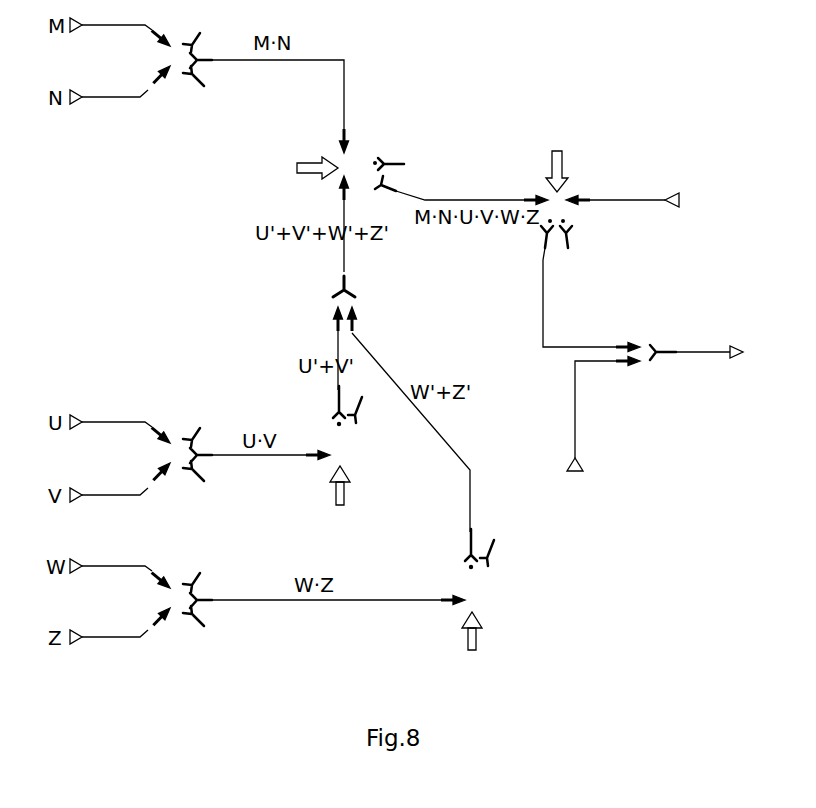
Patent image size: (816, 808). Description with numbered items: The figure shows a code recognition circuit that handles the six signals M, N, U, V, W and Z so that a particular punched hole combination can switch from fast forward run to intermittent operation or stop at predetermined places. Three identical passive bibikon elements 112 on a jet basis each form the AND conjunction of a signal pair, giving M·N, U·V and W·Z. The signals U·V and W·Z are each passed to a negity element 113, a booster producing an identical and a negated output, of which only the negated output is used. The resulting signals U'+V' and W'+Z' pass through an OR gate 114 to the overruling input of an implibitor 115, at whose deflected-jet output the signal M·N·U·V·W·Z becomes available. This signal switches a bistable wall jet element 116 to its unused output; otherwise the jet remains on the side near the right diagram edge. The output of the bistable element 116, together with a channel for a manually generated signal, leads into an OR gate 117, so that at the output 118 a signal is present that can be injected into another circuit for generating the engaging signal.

The bibikon element 112 is at (147, 318).
The negity element 113 is at (426, 490).
The OR gate 114 is at (363, 293).
The implibitor 115 is at (389, 160).
The bistable wall jet element 116 is at (575, 234).
The OR gate 117 is at (652, 340).
The output 118 is at (715, 366).